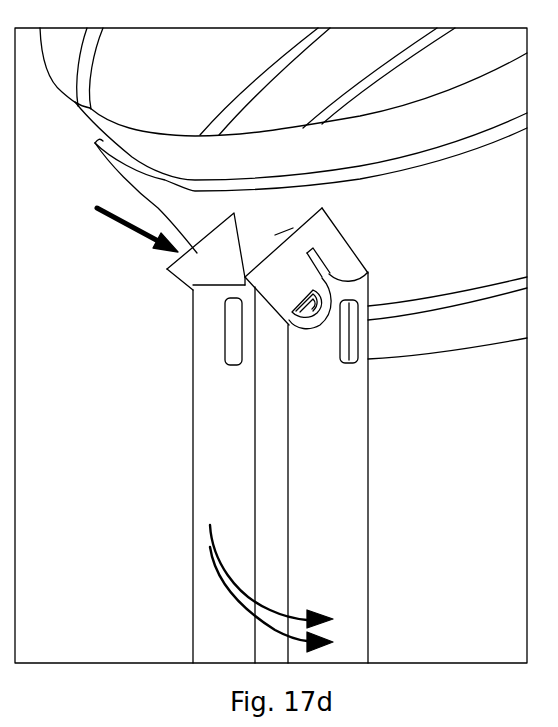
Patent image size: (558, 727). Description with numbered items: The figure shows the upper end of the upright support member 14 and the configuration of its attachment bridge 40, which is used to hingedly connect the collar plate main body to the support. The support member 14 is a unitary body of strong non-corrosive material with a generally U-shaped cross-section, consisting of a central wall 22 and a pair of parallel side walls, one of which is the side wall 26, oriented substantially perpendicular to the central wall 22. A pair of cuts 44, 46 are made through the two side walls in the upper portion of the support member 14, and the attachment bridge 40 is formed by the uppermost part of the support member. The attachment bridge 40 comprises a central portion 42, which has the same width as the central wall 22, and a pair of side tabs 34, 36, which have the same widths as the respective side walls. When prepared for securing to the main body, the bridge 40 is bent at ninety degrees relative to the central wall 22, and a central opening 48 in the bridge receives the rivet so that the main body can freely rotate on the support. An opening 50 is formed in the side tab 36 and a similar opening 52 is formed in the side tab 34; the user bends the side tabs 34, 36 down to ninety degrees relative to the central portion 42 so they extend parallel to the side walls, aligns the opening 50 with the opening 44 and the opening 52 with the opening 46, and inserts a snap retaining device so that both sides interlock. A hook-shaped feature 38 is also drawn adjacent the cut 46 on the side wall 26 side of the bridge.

The support member 14 is at (257, 468).
The central wall 22 is at (268, 512).
The side wall 26 is at (332, 517).
The side tab 34 is at (272, 293).
The side tab 36 is at (195, 284).
The hook arm 38 is at (340, 278).
The attachment bridge 40 is at (120, 220).
The central portion 42 is at (259, 228).
The cut 44 is at (230, 344).
The cut 46 is at (358, 336).
The central opening 48 is at (323, 214).
The opening 50 is at (222, 253).
The opening 52 is at (318, 321).